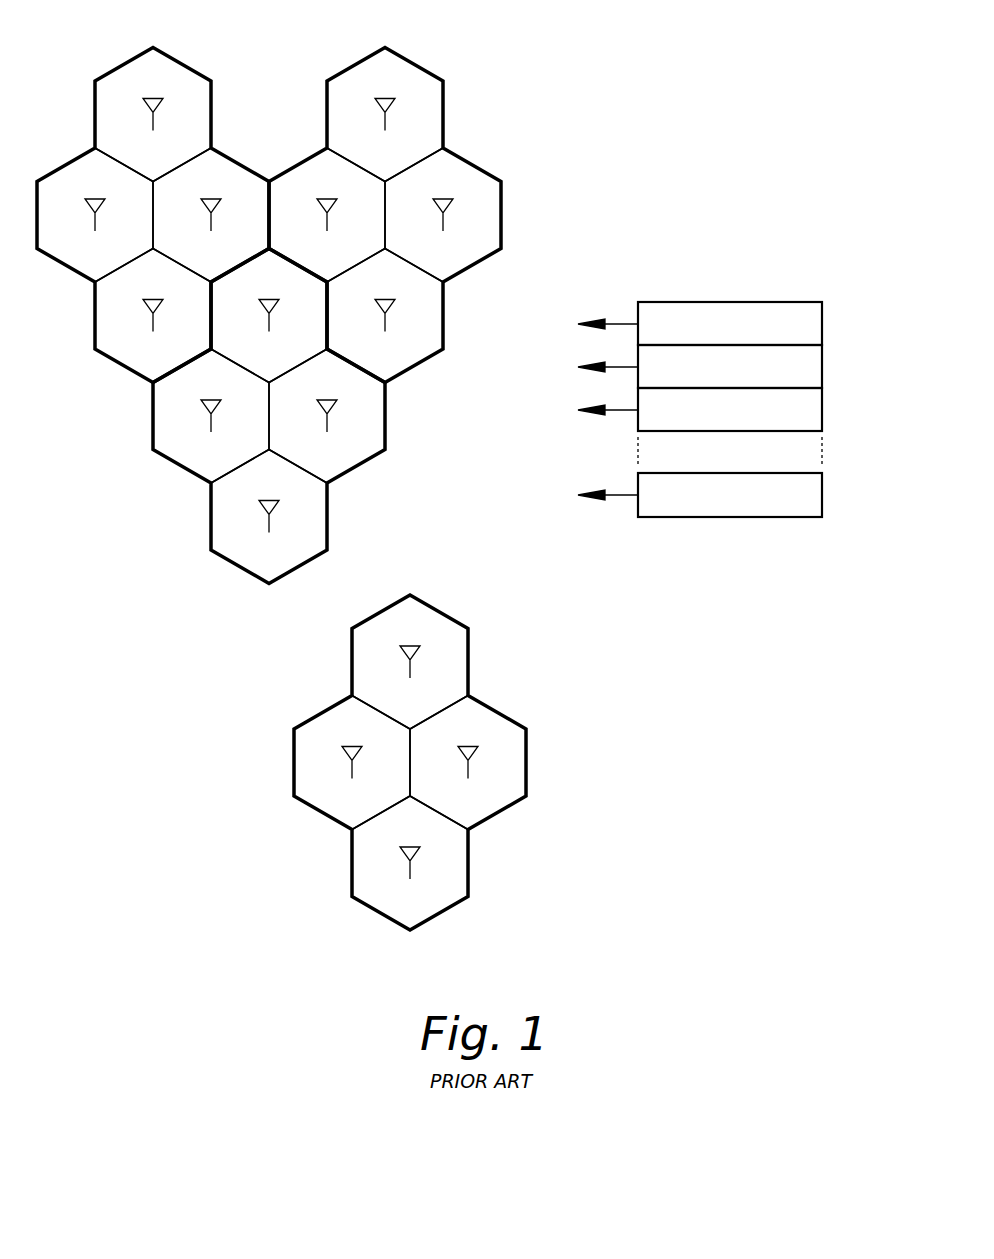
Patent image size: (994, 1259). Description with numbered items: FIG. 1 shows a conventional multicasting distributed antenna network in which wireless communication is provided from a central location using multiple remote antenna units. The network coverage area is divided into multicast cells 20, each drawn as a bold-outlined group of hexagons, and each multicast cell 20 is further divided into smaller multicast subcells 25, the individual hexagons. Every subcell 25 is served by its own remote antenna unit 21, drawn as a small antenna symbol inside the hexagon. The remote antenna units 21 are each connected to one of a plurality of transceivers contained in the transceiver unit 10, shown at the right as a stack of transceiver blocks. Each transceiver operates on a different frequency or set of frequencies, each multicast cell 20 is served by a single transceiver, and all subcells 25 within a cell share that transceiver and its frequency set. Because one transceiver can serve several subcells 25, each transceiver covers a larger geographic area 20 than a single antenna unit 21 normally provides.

The transceiver unit 10 is at (737, 366).
The multicast cell 20 is at (333, 470).
The remote antenna unit 21 is at (281, 489).
The multicast subcell 25 is at (300, 476).